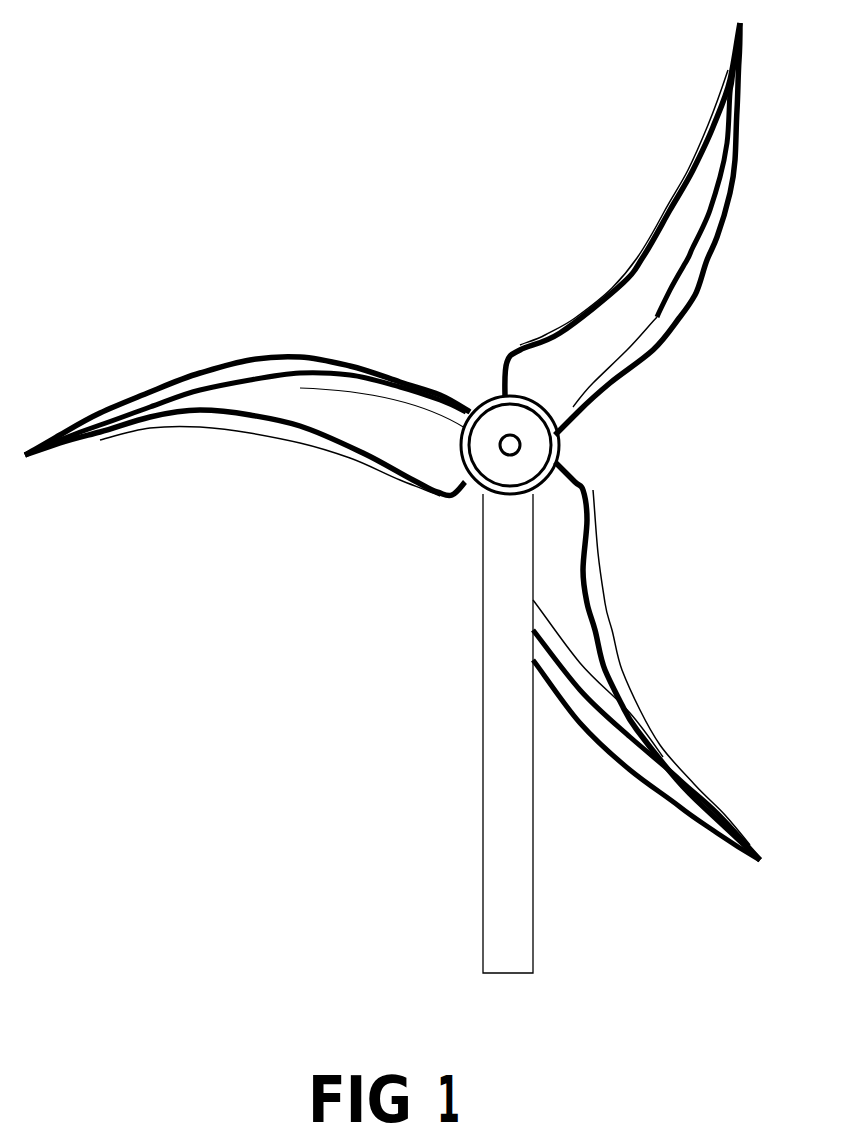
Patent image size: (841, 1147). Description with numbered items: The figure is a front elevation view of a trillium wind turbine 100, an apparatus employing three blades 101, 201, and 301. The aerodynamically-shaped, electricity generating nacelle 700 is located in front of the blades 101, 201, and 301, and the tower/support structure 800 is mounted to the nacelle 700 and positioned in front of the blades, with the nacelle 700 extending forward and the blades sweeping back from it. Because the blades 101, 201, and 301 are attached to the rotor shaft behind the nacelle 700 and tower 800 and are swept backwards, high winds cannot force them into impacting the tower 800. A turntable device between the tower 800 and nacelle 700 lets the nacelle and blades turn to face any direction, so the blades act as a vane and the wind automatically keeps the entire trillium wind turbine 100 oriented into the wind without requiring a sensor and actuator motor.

The trillium wind turbine 100 is at (190, 967).
The blade 101 is at (190, 330).
The blade 201 is at (538, 207).
The blade 301 is at (622, 552).
The nacelle 700 is at (497, 412).
The tower/support structure 800 is at (484, 832).